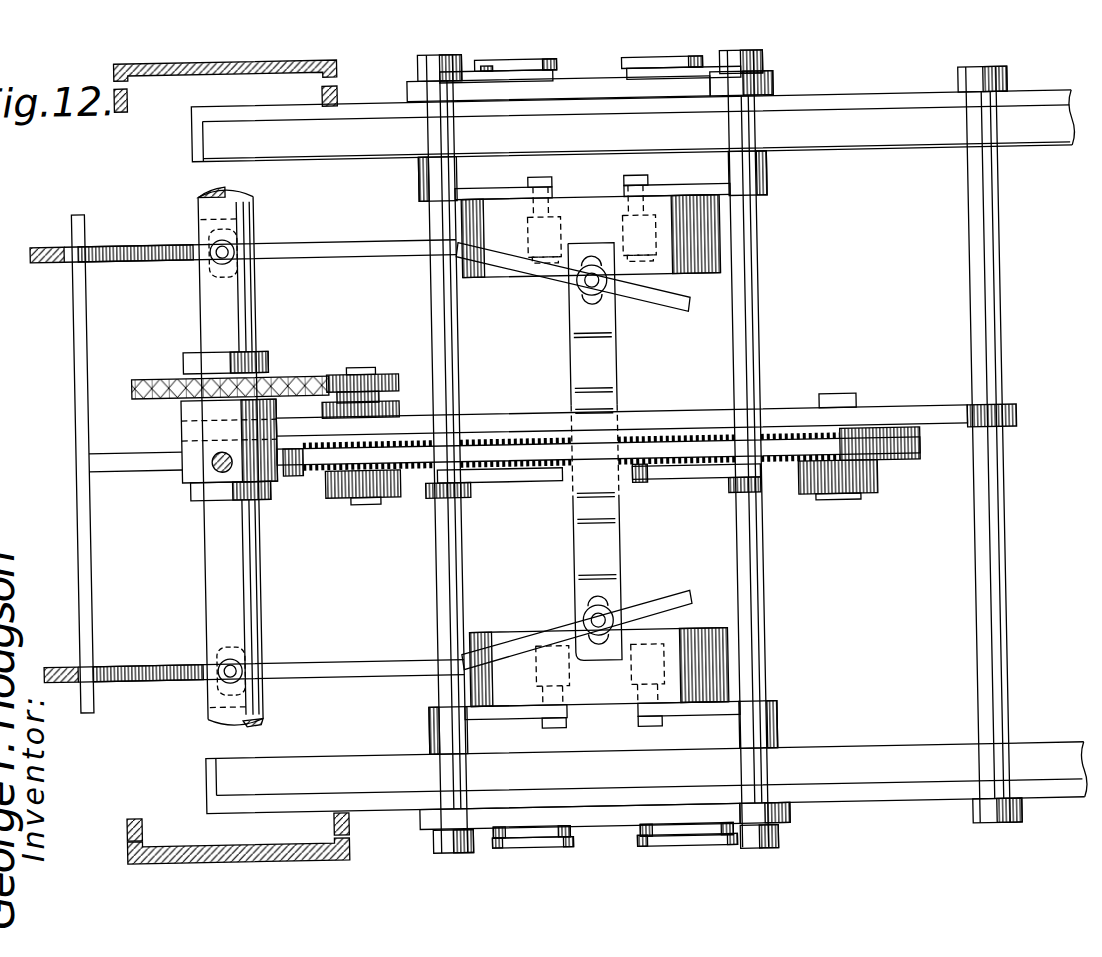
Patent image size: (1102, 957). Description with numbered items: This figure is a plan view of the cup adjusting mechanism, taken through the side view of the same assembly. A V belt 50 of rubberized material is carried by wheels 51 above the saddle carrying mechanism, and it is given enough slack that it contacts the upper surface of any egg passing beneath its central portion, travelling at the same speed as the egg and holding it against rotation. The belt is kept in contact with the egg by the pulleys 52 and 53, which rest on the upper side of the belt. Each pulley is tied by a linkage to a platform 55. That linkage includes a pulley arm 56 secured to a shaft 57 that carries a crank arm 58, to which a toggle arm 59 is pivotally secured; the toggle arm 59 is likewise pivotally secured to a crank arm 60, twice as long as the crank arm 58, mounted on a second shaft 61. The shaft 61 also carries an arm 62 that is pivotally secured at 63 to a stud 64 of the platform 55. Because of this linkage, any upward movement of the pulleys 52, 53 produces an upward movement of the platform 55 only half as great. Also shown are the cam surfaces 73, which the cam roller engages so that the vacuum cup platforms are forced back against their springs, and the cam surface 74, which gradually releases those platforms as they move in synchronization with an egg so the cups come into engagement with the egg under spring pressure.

The V belt 50 is at (704, 446).
The wheels 51 is at (891, 432).
The pulley 52 is at (531, 438).
The pulley 53 is at (652, 438).
The platform 55 is at (705, 277).
The pulley arm 56 is at (515, 481).
The shaft 57 is at (434, 284).
The crank arm 58 is at (483, 74).
The toggle arm 59 is at (640, 57).
The crank arm 60 is at (634, 74).
The shaft 61 is at (442, 203).
The arm 62 is at (494, 194).
The pivot 63 is at (630, 178).
The stud 64 is at (627, 228).
The cam surfaces 73 is at (338, 243).
The cam surface 74 is at (657, 305).